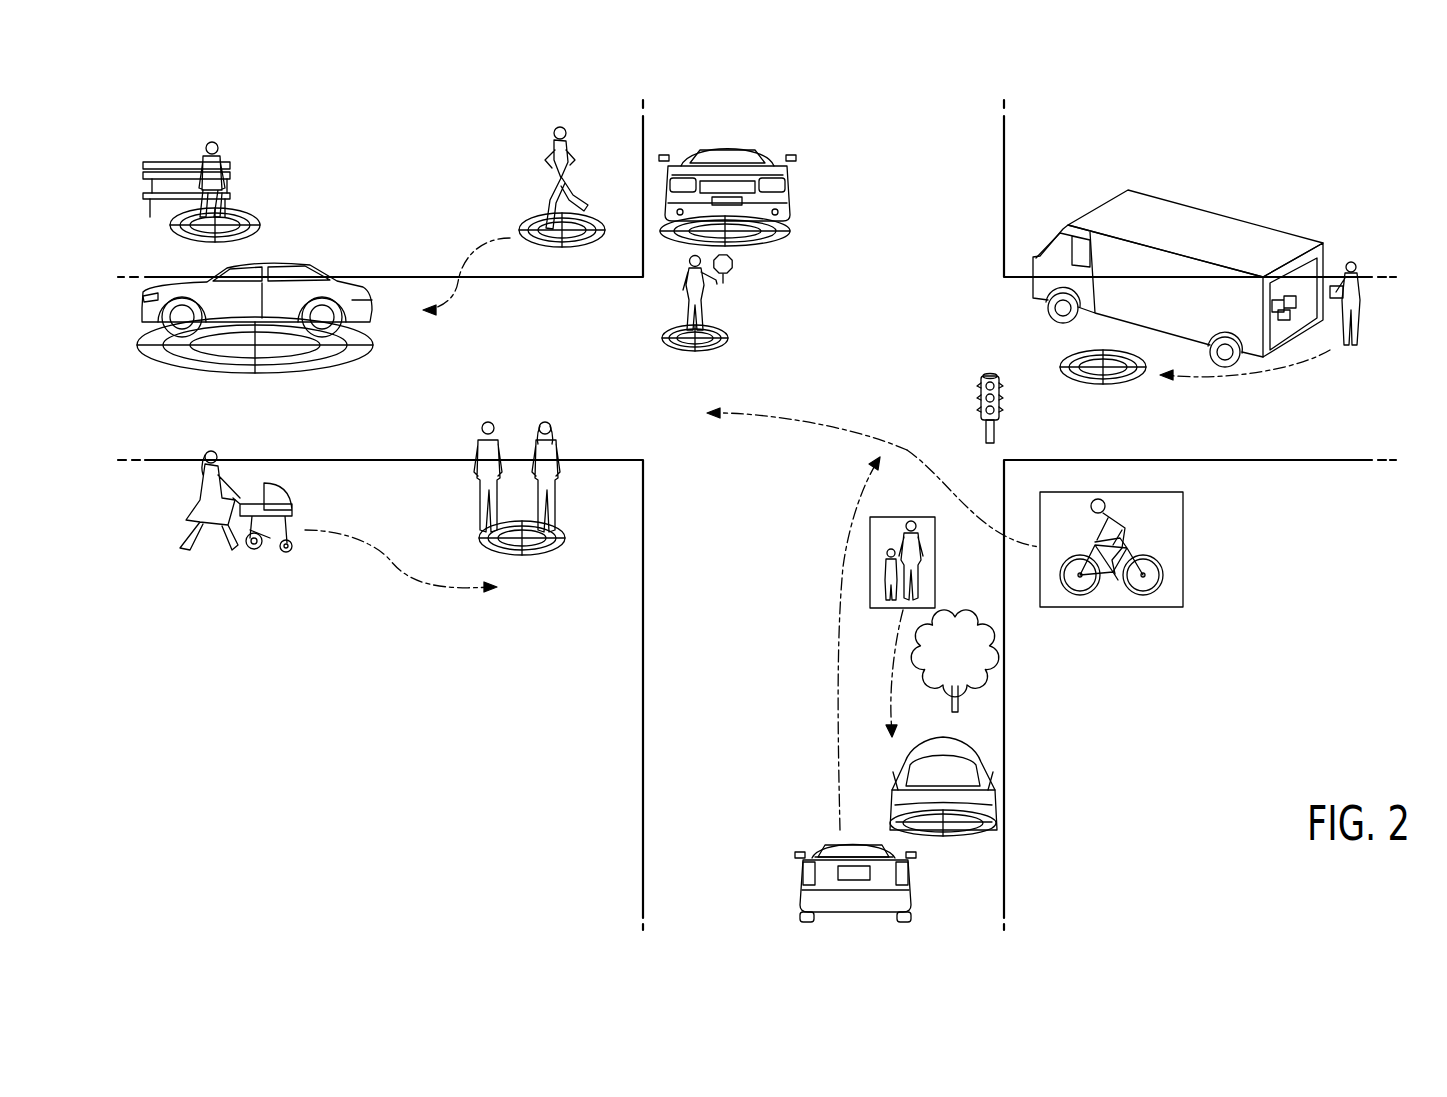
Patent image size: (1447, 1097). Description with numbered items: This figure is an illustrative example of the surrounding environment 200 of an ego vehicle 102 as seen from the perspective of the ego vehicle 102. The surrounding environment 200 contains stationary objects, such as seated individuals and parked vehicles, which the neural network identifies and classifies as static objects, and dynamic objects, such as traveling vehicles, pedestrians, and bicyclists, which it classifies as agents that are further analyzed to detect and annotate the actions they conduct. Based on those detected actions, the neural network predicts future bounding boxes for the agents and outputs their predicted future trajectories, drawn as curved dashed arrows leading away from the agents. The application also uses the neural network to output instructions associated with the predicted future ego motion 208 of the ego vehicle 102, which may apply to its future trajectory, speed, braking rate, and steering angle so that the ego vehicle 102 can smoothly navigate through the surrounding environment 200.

The ego vehicle 102 is at (803, 848).
The surrounding environment 200 is at (1195, 110).
The future ego motion 208 is at (843, 568).